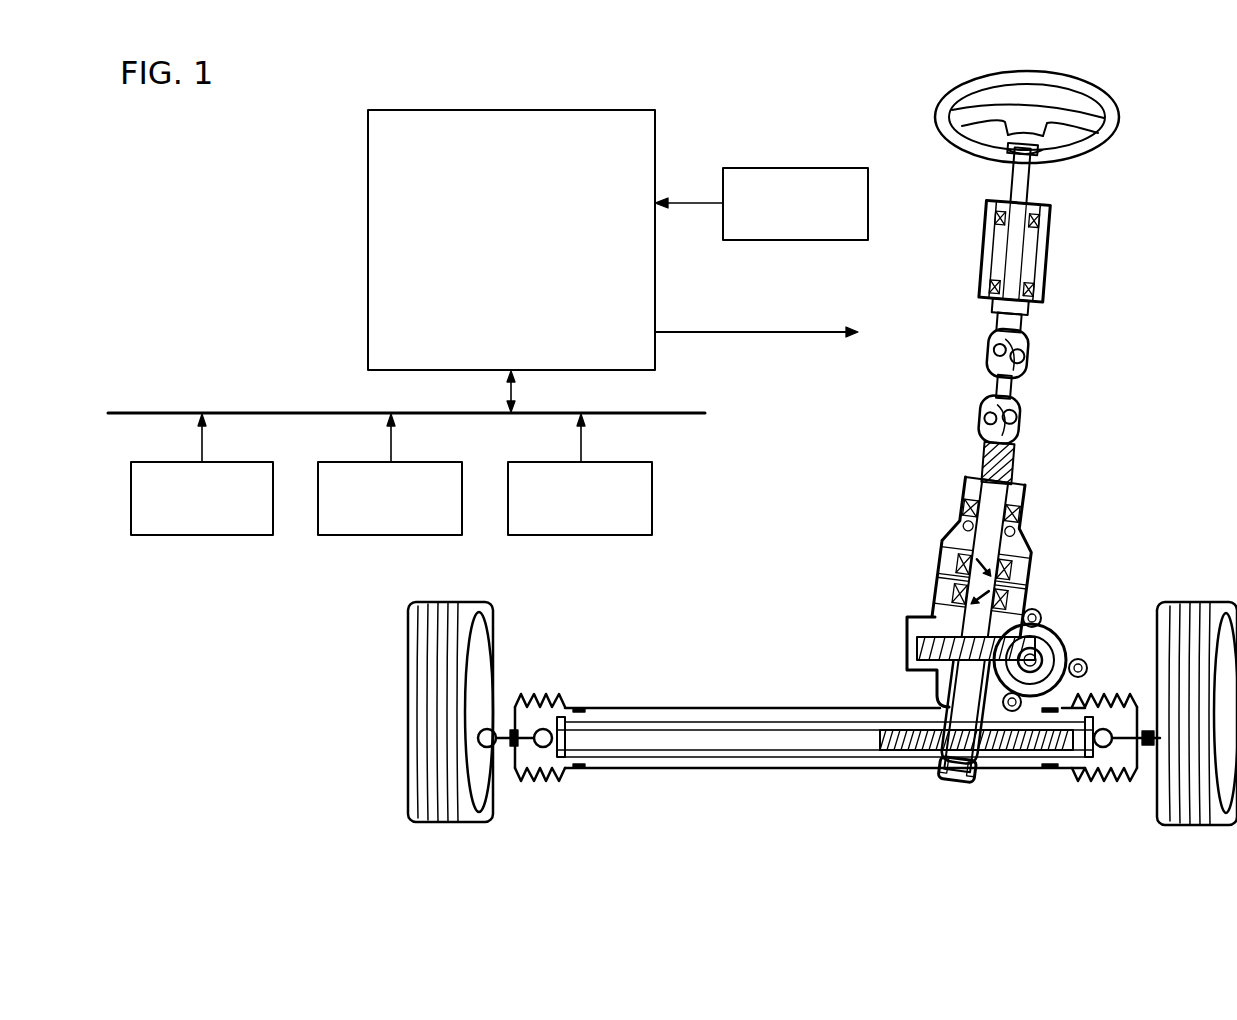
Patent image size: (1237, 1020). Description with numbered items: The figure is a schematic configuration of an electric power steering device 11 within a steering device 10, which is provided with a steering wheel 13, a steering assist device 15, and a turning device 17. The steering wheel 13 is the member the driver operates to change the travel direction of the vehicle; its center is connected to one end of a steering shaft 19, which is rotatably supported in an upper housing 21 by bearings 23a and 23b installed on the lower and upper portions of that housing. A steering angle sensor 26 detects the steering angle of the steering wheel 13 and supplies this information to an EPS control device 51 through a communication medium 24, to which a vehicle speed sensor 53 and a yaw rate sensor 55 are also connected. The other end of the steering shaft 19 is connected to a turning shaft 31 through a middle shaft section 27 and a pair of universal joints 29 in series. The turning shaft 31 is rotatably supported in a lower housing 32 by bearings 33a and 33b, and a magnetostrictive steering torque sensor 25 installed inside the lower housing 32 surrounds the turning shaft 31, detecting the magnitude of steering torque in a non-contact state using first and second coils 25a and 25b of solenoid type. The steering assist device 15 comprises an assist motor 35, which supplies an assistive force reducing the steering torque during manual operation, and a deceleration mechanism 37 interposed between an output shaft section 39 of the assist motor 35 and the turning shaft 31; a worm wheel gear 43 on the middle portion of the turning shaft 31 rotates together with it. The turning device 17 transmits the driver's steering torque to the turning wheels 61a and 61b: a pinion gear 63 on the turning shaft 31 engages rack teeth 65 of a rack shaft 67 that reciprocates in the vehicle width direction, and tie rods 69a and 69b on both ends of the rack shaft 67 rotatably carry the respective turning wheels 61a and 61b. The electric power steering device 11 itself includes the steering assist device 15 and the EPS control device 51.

The steering device 10 is at (1110, 62).
The electric power steering device 11 is at (736, 60).
The steering wheel 13 is at (1112, 118).
The steering assist device 15 is at (1131, 505).
The turning device 17 is at (902, 796).
The steering shaft 19 is at (1015, 238).
The upper housing 21 is at (1014, 251).
The bearing 23a is at (1011, 288).
The bearing 23b is at (1017, 219).
The communication medium 24 is at (605, 413).
The magnetostrictive steering torque sensor 25 is at (815, 168).
The first coil 25a is at (984, 567).
The second coil 25b is at (980, 597).
The steering angle sensor 26 is at (618, 462).
The middle shaft section 27 is at (1004, 387).
The universal joints 29 is at (1004, 386).
The turning shaft 31 is at (976, 625).
The lower housing 32 is at (977, 621).
The bearing 33a is at (957, 769).
The bearing 33b is at (991, 518).
The assist motor 35 is at (1058, 637).
The deceleration mechanism 37 is at (868, 658).
The output shaft section 39 is at (1043, 660).
The worm wheel gear 43 is at (916, 648).
The EPS control device 51 is at (584, 110).
The vehicle speed sensor 53 is at (426, 462).
The yaw rate sensor 55 is at (225, 462).
The turning wheel 61a is at (1190, 604).
The turning wheel 61b is at (486, 613).
The pinion gear 63 is at (925, 758).
The rack teeth 65 is at (888, 753).
The rack shaft 67 is at (818, 751).
The tie rod 69a is at (1125, 766).
The tie rod 69b is at (530, 748).